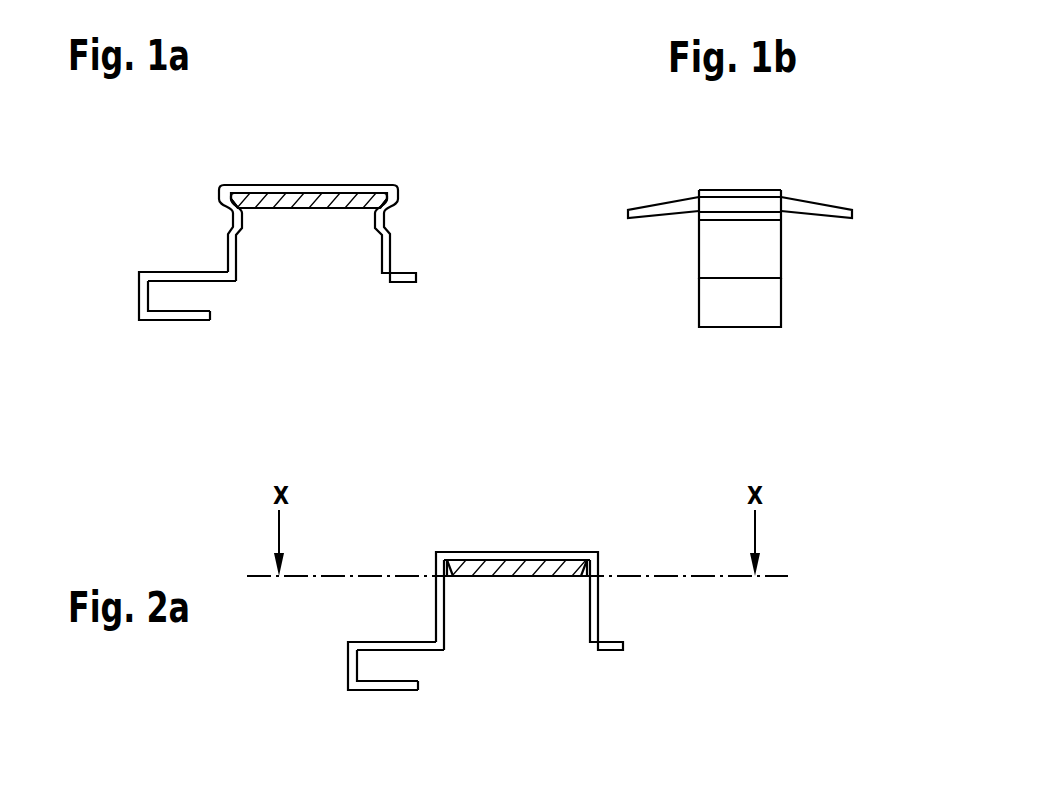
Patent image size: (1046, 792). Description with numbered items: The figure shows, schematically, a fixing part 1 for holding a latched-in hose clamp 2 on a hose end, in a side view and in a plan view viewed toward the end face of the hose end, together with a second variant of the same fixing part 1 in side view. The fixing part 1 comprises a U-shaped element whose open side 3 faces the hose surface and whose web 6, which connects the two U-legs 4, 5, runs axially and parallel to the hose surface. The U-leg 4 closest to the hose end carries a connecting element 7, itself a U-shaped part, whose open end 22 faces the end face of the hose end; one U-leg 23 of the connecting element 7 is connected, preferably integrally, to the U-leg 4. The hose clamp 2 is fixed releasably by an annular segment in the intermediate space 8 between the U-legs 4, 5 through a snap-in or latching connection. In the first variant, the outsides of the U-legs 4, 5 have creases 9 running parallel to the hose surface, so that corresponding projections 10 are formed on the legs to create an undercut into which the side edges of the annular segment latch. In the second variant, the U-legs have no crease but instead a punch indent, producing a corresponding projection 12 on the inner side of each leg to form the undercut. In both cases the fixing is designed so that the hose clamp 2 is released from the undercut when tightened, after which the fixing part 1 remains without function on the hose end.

In FIG. 1a, the fixing part 1 is at (180, 158).
In FIG. 1b, the fixing part 1 is at (829, 332).
In FIG. 2a, the fixing part 1 is at (386, 527).
In FIG. 1a, the hose clamp 2 is at (323, 200).
In FIG. 1b, the hose clamp 2 is at (820, 207).
In FIG. 2a, the hose clamp 2 is at (532, 570).
In FIG. 1a, the open side 3 is at (348, 300).
In FIG. 2a, the open side 3 is at (553, 667).
In FIG. 1a, the U-leg 4 is at (227, 253).
In FIG. 1b, the U-leg 4 is at (707, 255).
In FIG. 2a, the U-leg 4 is at (438, 622).
In FIG. 1a, the U-leg 5 is at (388, 260).
In FIG. 2a, the U-leg 5 is at (593, 625).
In FIG. 1a, the web 6 is at (293, 188).
In FIG. 1b, the web 6 is at (743, 193).
In FIG. 2a, the web 6 is at (502, 557).
In FIG. 1a, the connecting element 7 is at (110, 345).
In FIG. 1b, the connecting element 7 is at (743, 315).
In FIG. 2a, the connecting element 7 is at (319, 712).
In FIG. 1a, the intermediate space 8 is at (345, 242).
In FIG. 2a, the intermediate space 8 is at (552, 608).
In FIG. 1a, the crease 9 is at (228, 222).
In FIG. 1a, the projection 10 is at (233, 200).
In FIG. 2a, the projection 12 is at (450, 577).
In FIG. 1a, the open end 22 is at (227, 303).
In FIG. 2a, the open end 22 is at (433, 668).
In FIG. 1a, the U-leg of the connecting element 23 is at (165, 273).
In FIG. 2a, the U-leg of the connecting element 23 is at (377, 643).